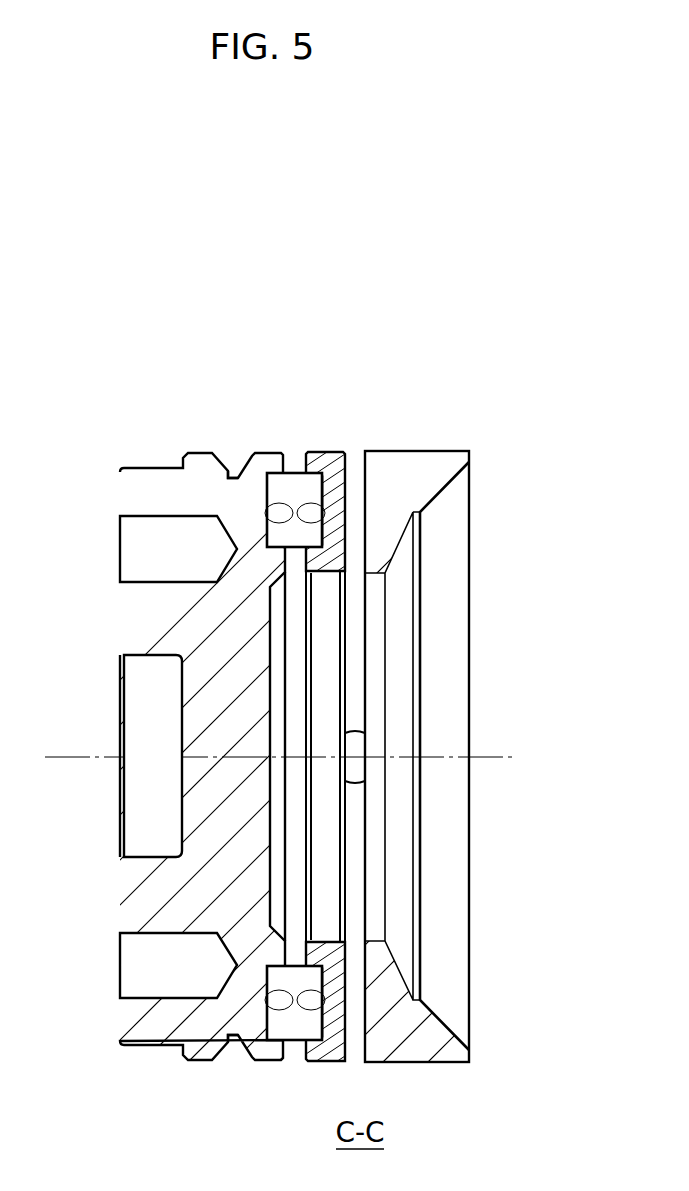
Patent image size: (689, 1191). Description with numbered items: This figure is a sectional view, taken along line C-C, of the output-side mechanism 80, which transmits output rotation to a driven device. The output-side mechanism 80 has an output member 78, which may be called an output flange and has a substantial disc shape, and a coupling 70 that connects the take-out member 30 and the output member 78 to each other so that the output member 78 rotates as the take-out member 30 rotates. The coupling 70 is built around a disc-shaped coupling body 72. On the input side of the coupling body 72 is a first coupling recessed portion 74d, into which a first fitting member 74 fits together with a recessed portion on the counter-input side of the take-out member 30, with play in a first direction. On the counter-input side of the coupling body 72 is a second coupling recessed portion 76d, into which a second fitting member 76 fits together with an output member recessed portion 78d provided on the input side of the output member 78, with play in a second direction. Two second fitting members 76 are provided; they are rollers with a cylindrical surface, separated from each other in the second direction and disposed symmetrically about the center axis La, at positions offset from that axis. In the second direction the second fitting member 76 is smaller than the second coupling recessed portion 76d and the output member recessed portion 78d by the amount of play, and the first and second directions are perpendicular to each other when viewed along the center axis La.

The output-side mechanism 80 is at (493, 379).
The output member 78 is at (130, 482).
The output member recessed portion 78d is at (237, 482).
The second fitting member 76 is at (290, 500).
The second coupling recessed portion 76d is at (330, 525).
The coupling body 72 is at (322, 465).
The coupling 70 is at (325, 444).
The take-out member 30 is at (455, 460).
The first fitting member 74 is at (357, 772).
The first coupling recessed portion 74d is at (473, 756).
The center axis La is at (485, 758).